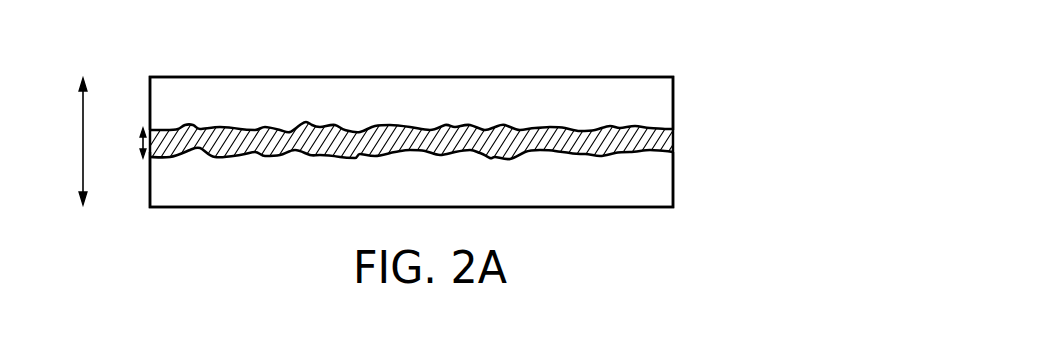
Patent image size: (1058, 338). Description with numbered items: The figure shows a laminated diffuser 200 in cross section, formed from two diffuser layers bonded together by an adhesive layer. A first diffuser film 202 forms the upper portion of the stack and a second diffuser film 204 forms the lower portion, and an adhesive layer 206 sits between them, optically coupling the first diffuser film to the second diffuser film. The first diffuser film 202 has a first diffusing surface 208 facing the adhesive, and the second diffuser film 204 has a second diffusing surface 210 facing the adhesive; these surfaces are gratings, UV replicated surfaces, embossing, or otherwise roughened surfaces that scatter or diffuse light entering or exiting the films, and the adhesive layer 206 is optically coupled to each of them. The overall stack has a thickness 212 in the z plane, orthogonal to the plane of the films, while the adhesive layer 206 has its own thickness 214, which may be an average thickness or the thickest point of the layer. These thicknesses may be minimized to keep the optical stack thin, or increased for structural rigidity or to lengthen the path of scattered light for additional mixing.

The laminated diffuser 200 is at (656, 40).
The first diffuser film 202 is at (665, 100).
The second diffuser film 204 is at (665, 188).
The adhesive layer 206 is at (668, 141).
The first diffusing surface 208 is at (412, 130).
The second diffusing surface 210 is at (412, 153).
The thickness 212 is at (83, 107).
The thickness 214 is at (143, 131).